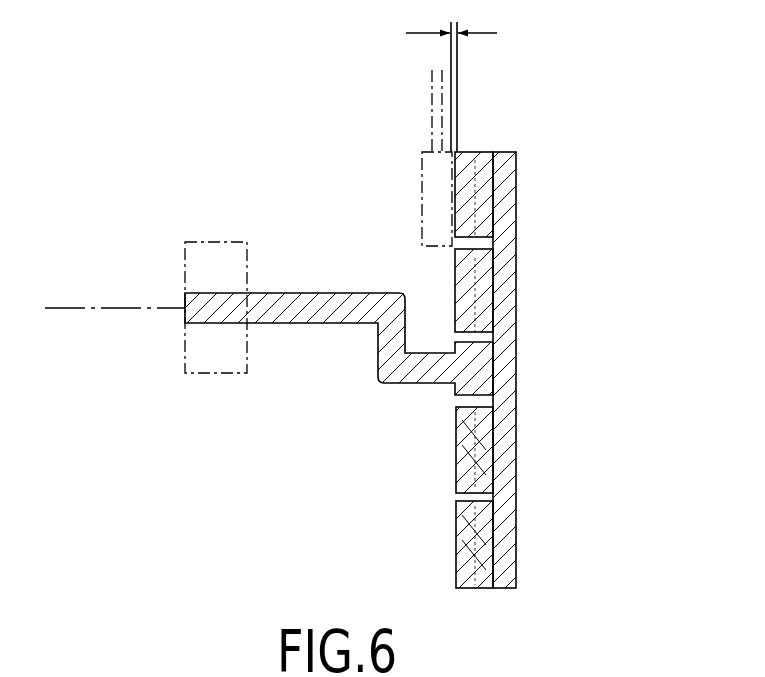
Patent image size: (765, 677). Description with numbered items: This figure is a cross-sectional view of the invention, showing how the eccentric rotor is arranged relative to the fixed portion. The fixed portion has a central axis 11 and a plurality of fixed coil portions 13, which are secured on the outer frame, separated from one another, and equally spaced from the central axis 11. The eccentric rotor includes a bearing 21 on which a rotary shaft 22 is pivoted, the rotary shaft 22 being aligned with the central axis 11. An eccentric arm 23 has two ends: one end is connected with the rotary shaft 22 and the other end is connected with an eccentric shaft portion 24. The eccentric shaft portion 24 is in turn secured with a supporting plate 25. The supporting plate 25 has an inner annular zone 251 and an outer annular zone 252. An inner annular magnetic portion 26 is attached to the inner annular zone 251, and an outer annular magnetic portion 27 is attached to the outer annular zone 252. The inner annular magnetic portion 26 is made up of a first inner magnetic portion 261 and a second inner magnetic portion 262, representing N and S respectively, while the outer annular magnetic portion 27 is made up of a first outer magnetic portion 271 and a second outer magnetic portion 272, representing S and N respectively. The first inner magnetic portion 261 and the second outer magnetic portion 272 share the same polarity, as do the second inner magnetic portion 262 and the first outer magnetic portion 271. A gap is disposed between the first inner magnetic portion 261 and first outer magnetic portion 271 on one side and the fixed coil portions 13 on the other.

The central axis 11 is at (71, 308).
The fixed coil portion 13 is at (422, 180).
The bearing 21 is at (198, 374).
The rotary shaft 22 is at (293, 325).
The eccentric arm 23 is at (382, 351).
The eccentric shaft portion 24 is at (427, 381).
The supporting plate 25 is at (517, 165).
The inner annular zone 251 is at (485, 280).
The outer annular zone 252 is at (487, 190).
The inner annular magnetic portion 26 is at (601, 426).
The first inner magnetic portion 261 is at (480, 432).
The second inner magnetic portion 262 is at (480, 460).
The outer annular magnetic portion 27 is at (601, 543).
The first outer magnetic portion 271 is at (470, 548).
The second outer magnetic portion 272 is at (487, 561).